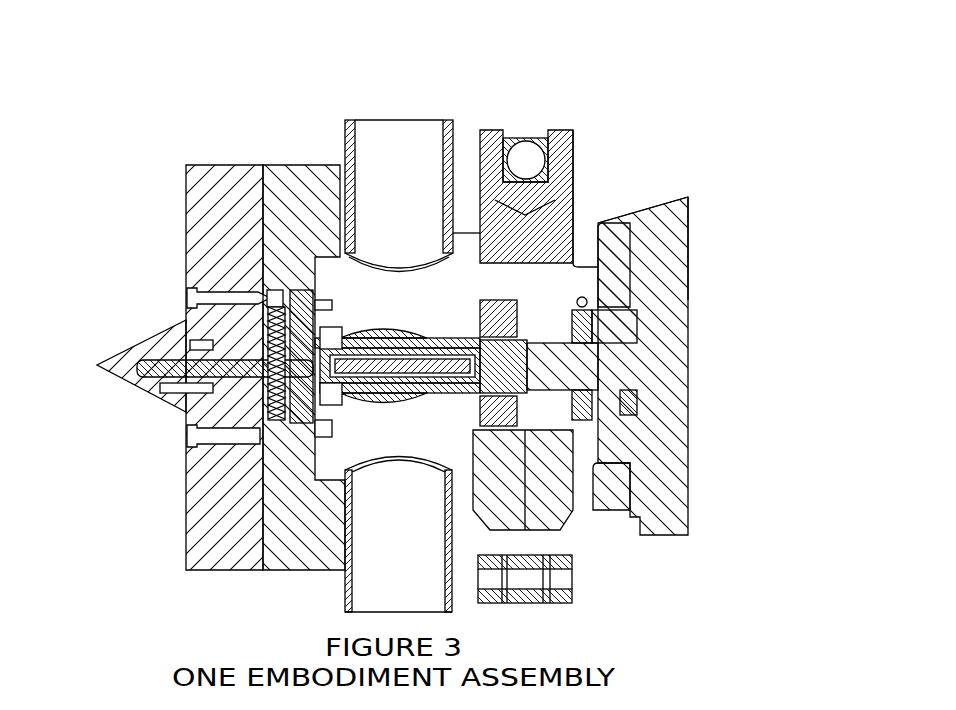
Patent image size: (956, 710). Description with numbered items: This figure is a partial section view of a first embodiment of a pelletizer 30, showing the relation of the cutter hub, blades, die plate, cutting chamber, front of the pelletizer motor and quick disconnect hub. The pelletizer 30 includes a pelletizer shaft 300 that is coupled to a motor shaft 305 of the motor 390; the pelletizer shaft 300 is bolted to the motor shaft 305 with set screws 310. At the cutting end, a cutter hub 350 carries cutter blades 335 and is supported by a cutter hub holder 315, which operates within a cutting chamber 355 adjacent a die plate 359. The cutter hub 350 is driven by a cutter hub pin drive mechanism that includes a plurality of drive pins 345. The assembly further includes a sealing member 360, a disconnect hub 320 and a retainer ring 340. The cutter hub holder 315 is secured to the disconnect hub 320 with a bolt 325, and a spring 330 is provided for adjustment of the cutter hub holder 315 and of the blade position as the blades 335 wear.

The pelletizer 30 is at (730, 193).
The pelletizer shaft 300 is at (458, 325).
The motor shaft 305 is at (620, 322).
The set screws 310 is at (590, 300).
The cutter hub holder 315 is at (372, 315).
The disconnect hub 320 is at (483, 333).
The bolt 325 is at (288, 278).
The spring 330 is at (343, 333).
The cutter blades 335 is at (320, 282).
The retainer ring 340 is at (530, 335).
The drive pins 345 is at (392, 322).
The cutter hub 350 is at (300, 272).
The cutting chamber 355 is at (278, 162).
The die plate 359 is at (185, 215).
The sealing member 360 is at (440, 325).
The motor 390 is at (690, 180).